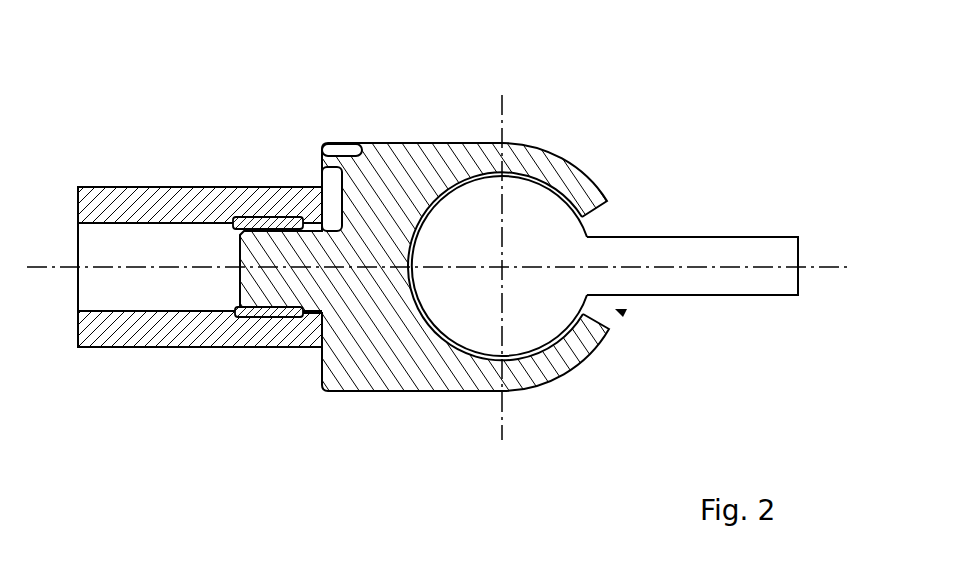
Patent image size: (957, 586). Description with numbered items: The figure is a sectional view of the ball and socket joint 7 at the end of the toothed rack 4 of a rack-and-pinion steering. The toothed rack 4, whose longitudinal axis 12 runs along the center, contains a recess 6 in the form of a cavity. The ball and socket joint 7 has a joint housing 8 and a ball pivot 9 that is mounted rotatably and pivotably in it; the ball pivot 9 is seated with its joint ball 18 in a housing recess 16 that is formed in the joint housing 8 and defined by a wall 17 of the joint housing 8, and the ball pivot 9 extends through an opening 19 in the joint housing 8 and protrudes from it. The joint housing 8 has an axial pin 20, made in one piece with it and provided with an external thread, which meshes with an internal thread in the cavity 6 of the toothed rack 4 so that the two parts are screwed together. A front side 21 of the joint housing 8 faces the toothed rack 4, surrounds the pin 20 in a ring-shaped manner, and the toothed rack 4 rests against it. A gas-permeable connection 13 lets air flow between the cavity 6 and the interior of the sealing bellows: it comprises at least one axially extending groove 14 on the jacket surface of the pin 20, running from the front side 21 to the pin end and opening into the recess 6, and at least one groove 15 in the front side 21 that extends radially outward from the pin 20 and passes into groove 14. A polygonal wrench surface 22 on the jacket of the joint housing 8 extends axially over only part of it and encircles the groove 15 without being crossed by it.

The toothed rack 4 is at (205, 198).
The recess 6 is at (108, 290).
The ball and socket joint 7 is at (438, 138).
The joint housing 8 is at (425, 380).
The ball pivot 9 is at (727, 277).
The longitudinal axis 12 is at (52, 264).
The gas-permeable connection 13 is at (321, 184).
The groove 14 is at (311, 214).
The groove 15 is at (330, 170).
The housing recess 16 is at (551, 184).
The wall 17 is at (560, 360).
The joint ball 18 is at (567, 248).
The opening 19 is at (621, 311).
The axial pin 20 is at (290, 305).
The front side 21 is at (319, 380).
The polygonal wrench surface 22 is at (337, 152).